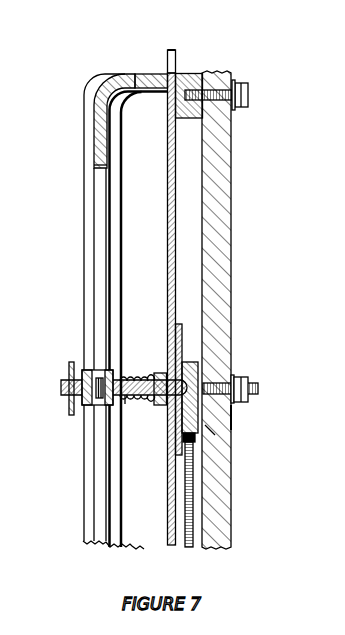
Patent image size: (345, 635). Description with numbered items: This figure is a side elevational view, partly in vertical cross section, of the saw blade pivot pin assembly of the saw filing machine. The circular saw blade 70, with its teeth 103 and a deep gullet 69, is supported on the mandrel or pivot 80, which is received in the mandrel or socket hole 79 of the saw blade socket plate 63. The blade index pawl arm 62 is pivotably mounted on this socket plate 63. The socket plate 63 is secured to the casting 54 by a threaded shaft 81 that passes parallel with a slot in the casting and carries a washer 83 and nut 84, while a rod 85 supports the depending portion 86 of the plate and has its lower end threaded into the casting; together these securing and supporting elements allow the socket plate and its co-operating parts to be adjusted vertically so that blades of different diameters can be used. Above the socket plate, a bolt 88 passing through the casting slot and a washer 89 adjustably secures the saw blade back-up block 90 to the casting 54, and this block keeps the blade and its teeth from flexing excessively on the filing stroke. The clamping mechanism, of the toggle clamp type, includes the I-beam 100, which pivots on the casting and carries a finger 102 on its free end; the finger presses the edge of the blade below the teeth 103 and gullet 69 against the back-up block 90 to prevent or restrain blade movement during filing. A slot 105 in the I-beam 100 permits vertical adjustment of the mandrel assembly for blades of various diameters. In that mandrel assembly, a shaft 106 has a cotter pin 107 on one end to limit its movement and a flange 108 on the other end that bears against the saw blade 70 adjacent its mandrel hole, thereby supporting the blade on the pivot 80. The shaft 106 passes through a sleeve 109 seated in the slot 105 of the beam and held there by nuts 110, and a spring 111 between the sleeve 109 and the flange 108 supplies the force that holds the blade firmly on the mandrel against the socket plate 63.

The casting 54 is at (220, 511).
The blade index pawl arm 62 is at (182, 331).
The saw blade socket plate 63 is at (186, 364).
The deep gullet 69 is at (176, 63).
The circular saw blade 70 is at (168, 139).
The mandrel or socket hole 79 is at (186, 388).
The mandrel or pivot 80 is at (231, 420).
The threaded shaft 81 is at (260, 389).
The washer 83 is at (236, 380).
The nut 84 is at (241, 402).
The rod 85 is at (186, 545).
The depending portion 86 is at (210, 428).
The bolt 88 is at (242, 88).
The washer 89 is at (234, 108).
The saw blade back-up block 90 is at (188, 110).
The I-beam 100 is at (99, 124).
The finger 102 is at (157, 77).
The teeth 103 is at (174, 51).
The slot 105 is at (105, 267).
The shaft 106 is at (141, 404).
The cotter pin 107 is at (69, 401).
The flange 108 is at (158, 373).
The sleeve 109 is at (98, 400).
The nuts 110 is at (108, 372).
The spring 111 is at (127, 405).